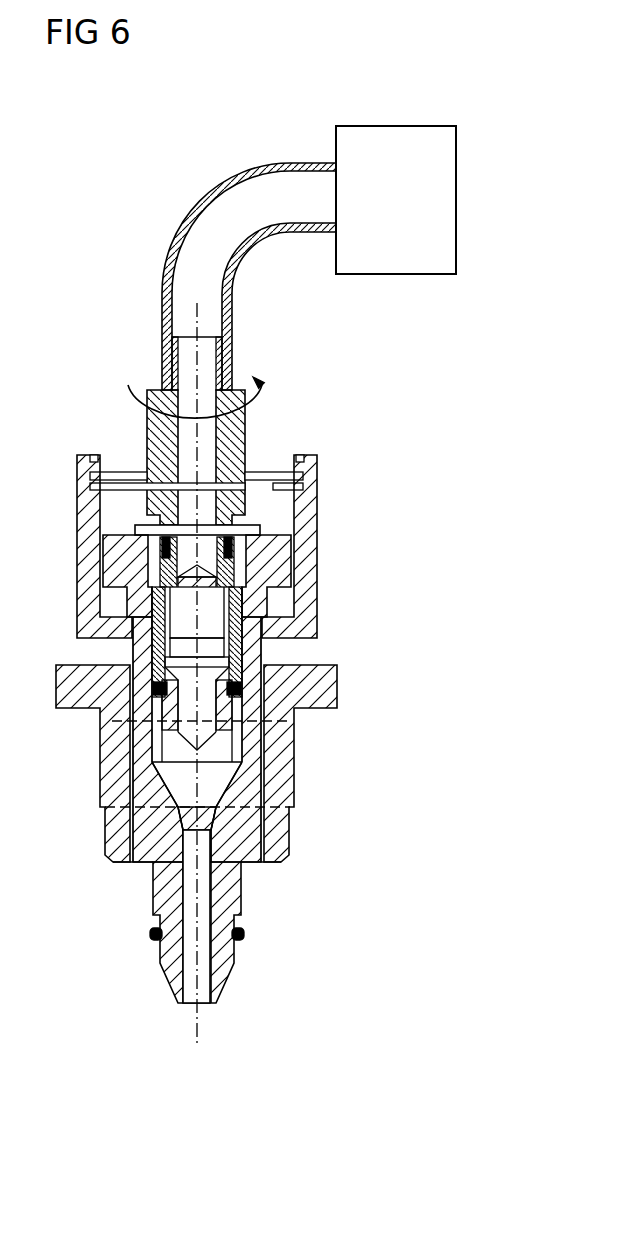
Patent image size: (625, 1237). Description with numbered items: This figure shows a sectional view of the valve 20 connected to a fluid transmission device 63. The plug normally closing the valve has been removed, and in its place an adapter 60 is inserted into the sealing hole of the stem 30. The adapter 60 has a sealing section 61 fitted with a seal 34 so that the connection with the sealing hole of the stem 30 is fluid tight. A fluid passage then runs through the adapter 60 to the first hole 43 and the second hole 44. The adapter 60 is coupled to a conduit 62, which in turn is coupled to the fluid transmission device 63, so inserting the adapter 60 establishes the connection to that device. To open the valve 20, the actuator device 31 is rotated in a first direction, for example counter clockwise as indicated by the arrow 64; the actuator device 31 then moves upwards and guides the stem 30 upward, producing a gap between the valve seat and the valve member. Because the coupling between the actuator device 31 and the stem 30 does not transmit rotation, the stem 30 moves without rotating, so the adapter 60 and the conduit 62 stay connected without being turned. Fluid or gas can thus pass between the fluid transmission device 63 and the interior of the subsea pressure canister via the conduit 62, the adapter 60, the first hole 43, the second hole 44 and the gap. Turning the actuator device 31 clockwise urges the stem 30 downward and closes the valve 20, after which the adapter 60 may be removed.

The valve 20 is at (351, 450).
The stem 30 is at (230, 710).
The actuator device 31 is at (276, 562).
The seal 34 is at (232, 548).
The first hole 43 is at (192, 680).
The second hole 44 is at (178, 755).
The adapter 60 is at (238, 452).
The sealing section 61 is at (262, 589).
The conduit 62 is at (289, 180).
The fluid transmission device 63 is at (394, 126).
The arrow 64 is at (128, 388).